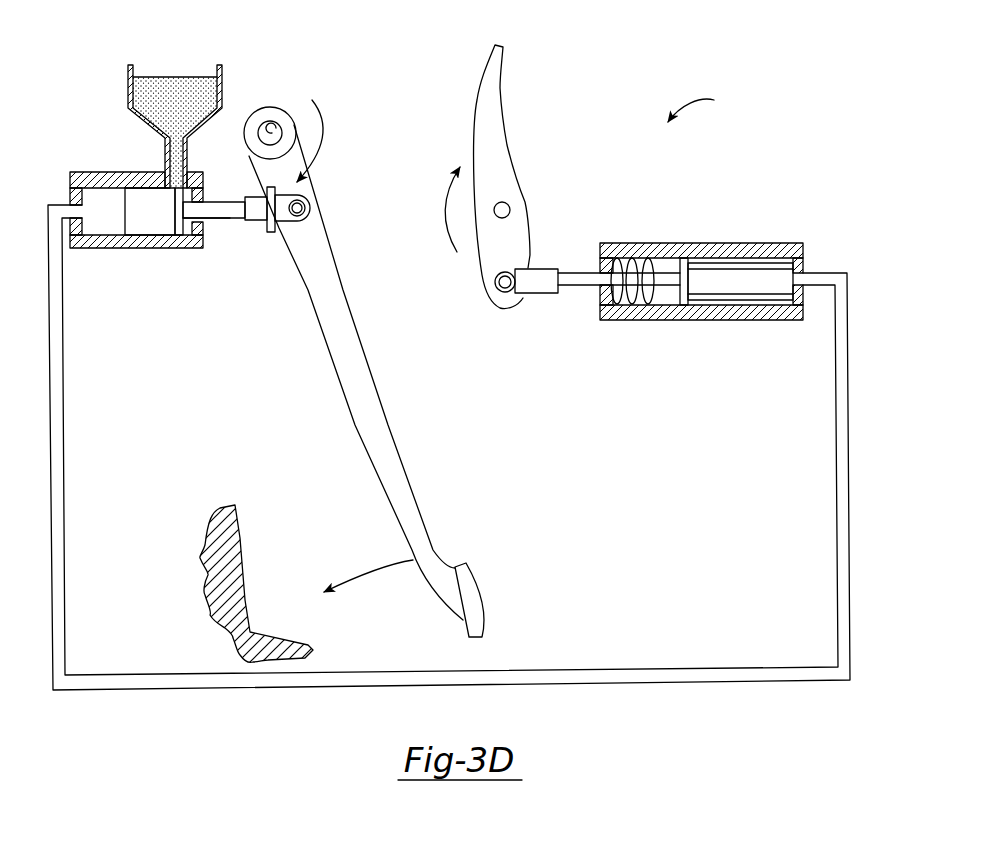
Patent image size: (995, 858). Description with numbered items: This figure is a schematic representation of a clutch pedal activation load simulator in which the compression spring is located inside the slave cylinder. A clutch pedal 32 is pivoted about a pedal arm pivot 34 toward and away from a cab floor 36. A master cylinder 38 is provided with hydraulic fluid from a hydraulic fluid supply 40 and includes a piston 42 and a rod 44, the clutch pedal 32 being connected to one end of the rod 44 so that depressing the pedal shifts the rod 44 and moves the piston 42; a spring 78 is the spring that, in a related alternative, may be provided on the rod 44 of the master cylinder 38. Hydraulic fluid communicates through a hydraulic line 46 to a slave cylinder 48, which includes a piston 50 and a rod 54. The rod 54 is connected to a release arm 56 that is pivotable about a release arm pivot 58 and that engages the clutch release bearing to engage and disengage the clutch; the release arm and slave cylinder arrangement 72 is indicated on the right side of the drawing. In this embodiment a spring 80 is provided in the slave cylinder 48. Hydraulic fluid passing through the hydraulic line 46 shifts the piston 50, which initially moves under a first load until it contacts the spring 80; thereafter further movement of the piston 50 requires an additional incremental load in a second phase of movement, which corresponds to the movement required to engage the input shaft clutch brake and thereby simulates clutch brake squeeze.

The clutch pedal 32 is at (483, 607).
The pedal arm pivot 34 is at (272, 133).
The cab floor 36 is at (272, 643).
The master cylinder 38 is at (140, 247).
The hydraulic fluid supply 40 is at (151, 88).
The piston 42 is at (190, 193).
The rod 44 is at (230, 214).
The hydraulic line 46 is at (680, 670).
The slave cylinder 48 is at (768, 312).
The piston 50 is at (685, 263).
The rod 54 is at (573, 276).
The release arm 56 is at (498, 107).
The release arm pivot 58 is at (507, 213).
The actuator assembly 72 is at (624, 209).
The spring 78 is at (222, 228).
The spring 80 is at (652, 300).